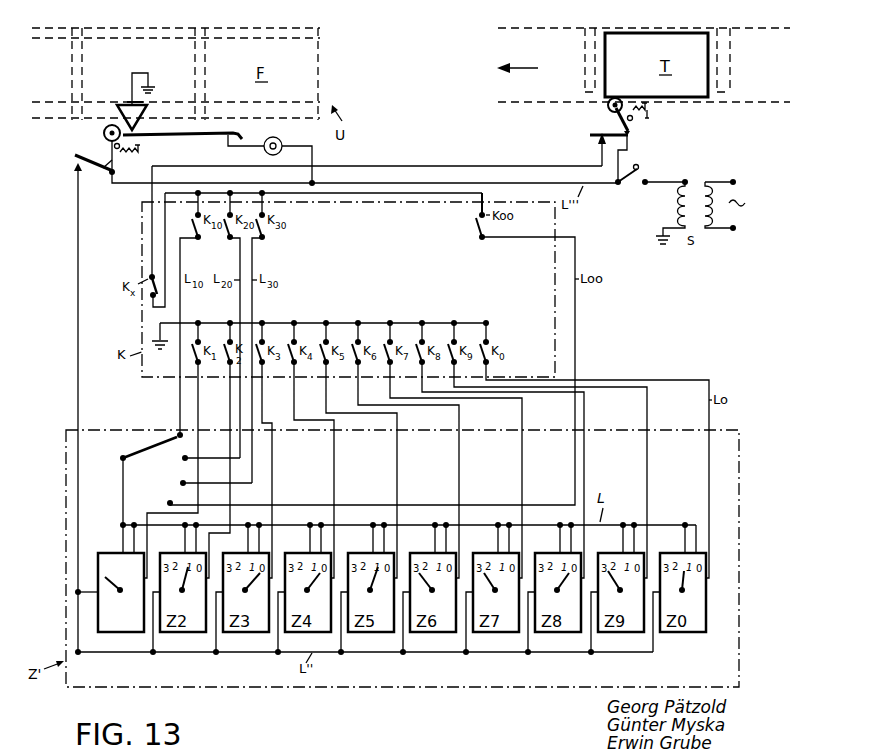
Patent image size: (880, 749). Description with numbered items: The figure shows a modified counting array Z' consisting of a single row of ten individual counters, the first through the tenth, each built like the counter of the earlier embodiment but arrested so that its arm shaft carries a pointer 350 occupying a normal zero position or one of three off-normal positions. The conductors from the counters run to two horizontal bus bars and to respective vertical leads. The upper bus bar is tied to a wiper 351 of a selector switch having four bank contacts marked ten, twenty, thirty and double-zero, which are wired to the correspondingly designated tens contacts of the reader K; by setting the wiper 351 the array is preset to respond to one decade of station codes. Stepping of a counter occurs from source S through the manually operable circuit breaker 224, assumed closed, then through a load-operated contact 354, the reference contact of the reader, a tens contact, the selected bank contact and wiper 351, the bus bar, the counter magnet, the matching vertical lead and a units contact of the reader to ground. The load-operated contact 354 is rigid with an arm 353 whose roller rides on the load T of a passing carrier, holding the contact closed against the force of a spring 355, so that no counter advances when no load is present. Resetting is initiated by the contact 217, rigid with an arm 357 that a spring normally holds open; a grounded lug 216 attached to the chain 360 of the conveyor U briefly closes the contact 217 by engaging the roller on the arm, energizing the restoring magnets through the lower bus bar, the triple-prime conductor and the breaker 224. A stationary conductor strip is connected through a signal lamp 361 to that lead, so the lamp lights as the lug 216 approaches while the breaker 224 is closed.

The lug 216 is at (128, 108).
The chain 360 is at (193, 102).
The arm 357 is at (110, 146).
The contact 217 is at (72, 165).
The signal lamp 361 is at (281, 141).
The load-operated contact 354 is at (611, 136).
The arm 353 is at (630, 133).
The spring 355 is at (633, 120).
The manually operable circuit breaker 224 is at (634, 176).
The wiper 351 is at (165, 438).
The pointer 350 is at (109, 577).